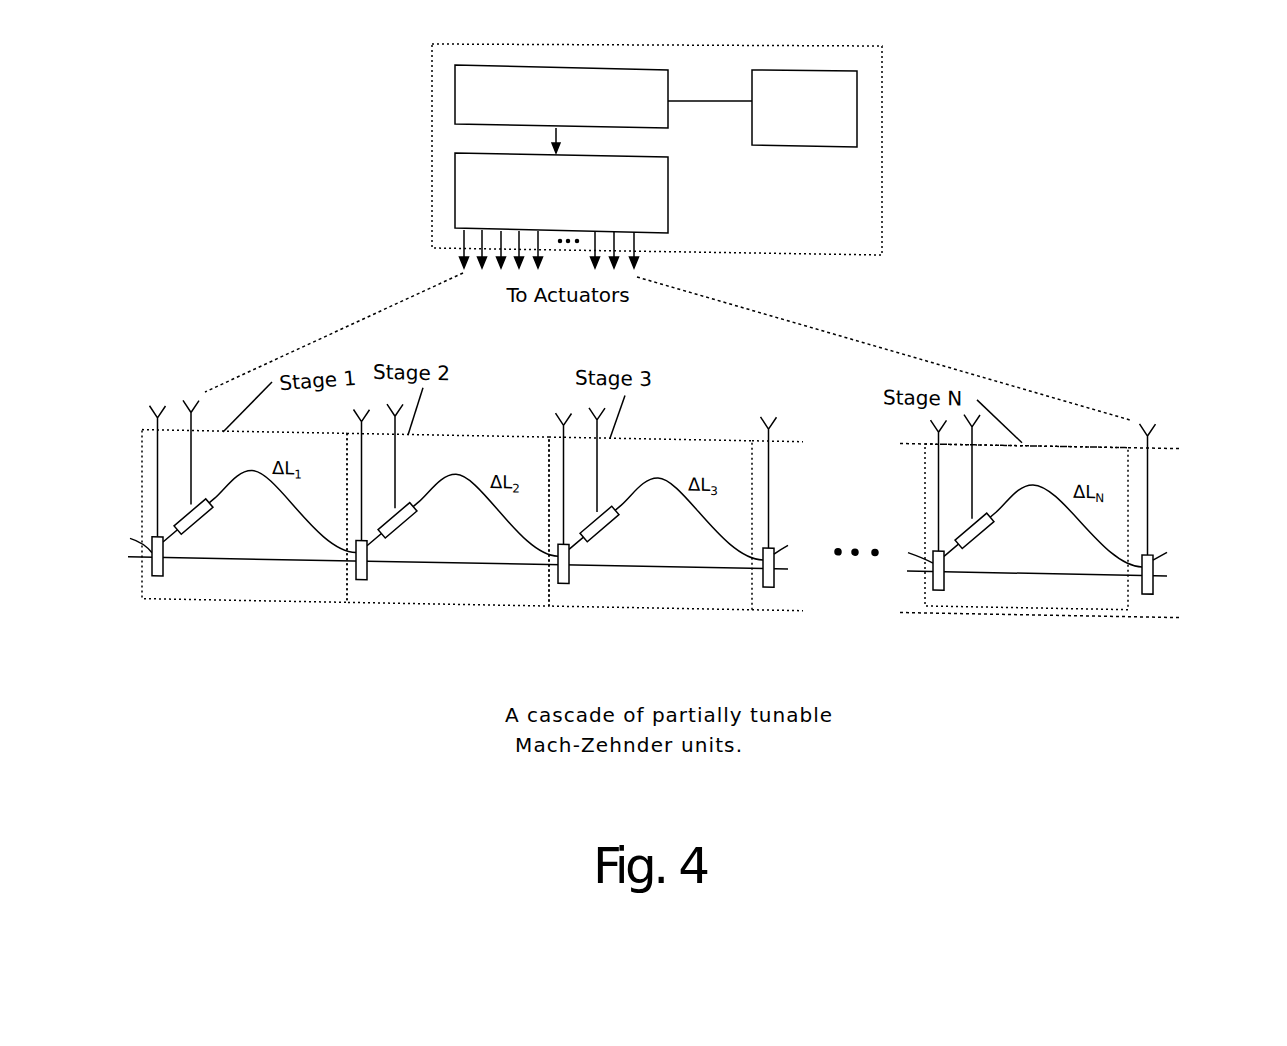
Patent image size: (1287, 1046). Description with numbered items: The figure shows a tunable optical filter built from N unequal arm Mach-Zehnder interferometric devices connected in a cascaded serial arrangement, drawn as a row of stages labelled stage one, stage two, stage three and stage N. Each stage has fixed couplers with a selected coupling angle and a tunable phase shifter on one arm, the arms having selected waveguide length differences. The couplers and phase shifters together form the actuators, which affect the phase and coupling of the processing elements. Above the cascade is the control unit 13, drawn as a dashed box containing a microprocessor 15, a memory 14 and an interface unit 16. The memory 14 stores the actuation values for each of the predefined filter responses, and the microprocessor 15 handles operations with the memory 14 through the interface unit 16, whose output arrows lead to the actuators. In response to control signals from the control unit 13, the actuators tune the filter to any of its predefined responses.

The control unit 13 is at (825, 245).
The memory 14 is at (818, 137).
The microprocessor 15 is at (653, 85).
The interface unit 16 is at (653, 175).